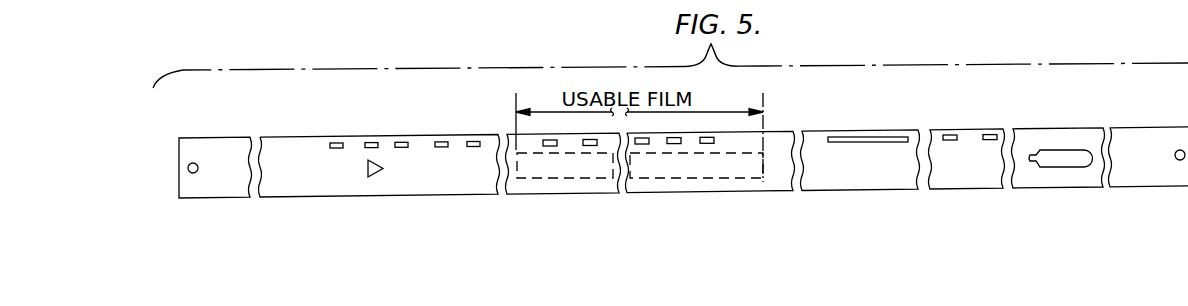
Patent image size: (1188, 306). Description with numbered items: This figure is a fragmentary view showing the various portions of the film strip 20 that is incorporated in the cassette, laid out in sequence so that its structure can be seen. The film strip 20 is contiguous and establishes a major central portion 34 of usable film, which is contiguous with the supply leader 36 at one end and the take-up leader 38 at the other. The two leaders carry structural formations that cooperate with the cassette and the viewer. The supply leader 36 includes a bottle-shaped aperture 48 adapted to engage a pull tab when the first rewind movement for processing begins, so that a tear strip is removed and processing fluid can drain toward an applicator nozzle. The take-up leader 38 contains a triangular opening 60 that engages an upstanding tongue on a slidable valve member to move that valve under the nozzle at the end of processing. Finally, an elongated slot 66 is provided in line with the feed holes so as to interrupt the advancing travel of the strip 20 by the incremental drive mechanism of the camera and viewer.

The film strip 20 is at (683, 153).
The major central portion of usable film 34 is at (667, 187).
The supply leader 36 is at (967, 133).
The take-up leader 38 is at (379, 143).
The bottle-shaped aperture 48 is at (1058, 157).
The triangular opening 60 is at (381, 161).
The elongated slot 66 is at (888, 133).